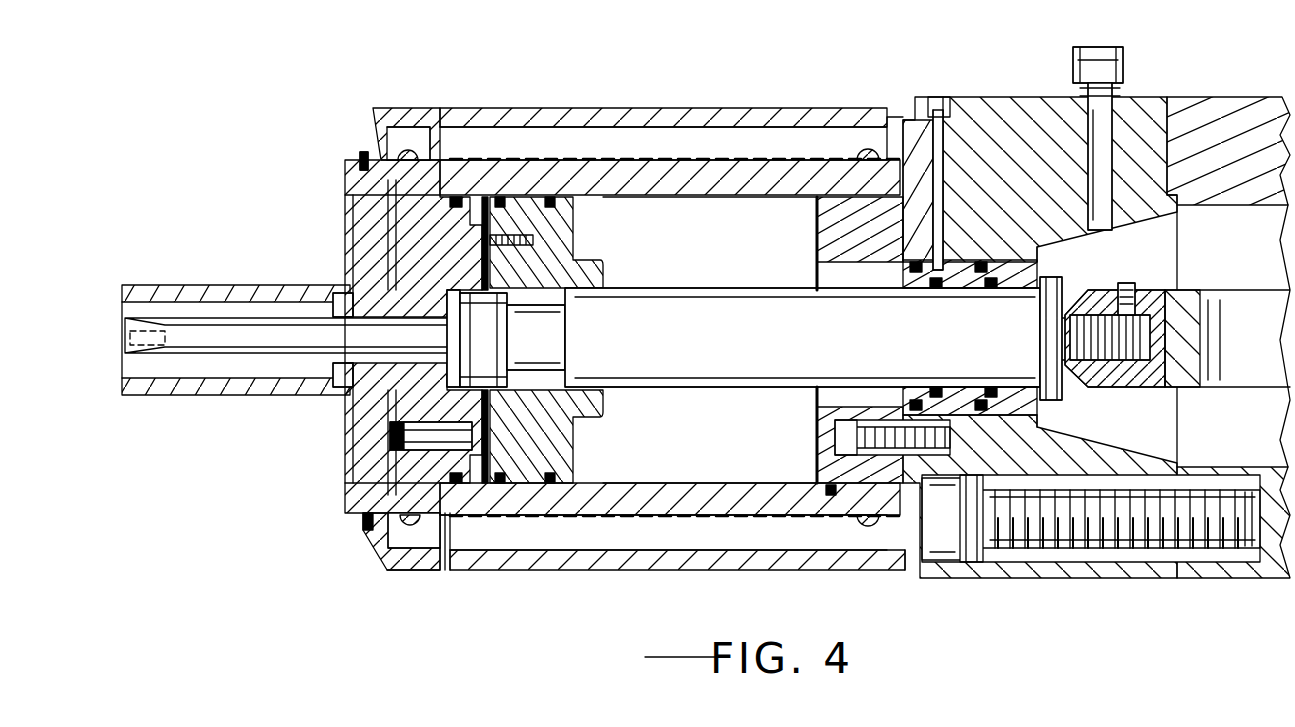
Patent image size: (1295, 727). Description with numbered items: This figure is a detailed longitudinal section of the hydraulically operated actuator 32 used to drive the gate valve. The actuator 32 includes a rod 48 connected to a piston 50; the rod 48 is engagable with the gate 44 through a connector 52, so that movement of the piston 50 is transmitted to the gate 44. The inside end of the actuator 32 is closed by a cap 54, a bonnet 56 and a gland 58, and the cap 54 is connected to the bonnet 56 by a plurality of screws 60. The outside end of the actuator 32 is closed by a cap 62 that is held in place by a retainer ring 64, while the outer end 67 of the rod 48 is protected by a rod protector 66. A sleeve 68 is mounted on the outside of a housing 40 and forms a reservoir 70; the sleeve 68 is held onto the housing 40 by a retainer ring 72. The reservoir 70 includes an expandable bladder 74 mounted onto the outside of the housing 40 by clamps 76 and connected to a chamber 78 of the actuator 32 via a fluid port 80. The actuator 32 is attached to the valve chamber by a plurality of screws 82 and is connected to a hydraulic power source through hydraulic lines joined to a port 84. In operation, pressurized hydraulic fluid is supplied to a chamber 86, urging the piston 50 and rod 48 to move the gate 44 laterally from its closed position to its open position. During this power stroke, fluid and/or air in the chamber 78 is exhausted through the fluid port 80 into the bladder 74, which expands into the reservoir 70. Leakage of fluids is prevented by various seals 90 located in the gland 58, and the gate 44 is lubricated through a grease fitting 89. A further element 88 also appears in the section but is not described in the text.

The actuator 32 is at (753, 82).
The housing 40 is at (345, 178).
The gate 44 is at (1238, 275).
The rod 48 is at (700, 288).
The piston 50 is at (565, 230).
The connector 52 is at (1143, 285).
The cap 54 is at (815, 238).
The bonnet 56 is at (1012, 110).
The gland 58 is at (960, 270).
The screws 60 is at (845, 440).
The cap 62 is at (410, 258).
The retainer ring 64 is at (395, 190).
The rod protector 66 is at (217, 396).
The outer end 67 is at (183, 350).
The sleeve 68 is at (573, 565).
The reservoir 70 is at (668, 535).
The retainer ring 72 is at (370, 150).
The expandable bladder 74 is at (727, 517).
The clamps 76 is at (405, 555).
The chamber 78 is at (770, 487).
The fluid port 80 is at (827, 492).
The screws 82 is at (1020, 555).
The port 84 is at (395, 447).
The chamber 86 is at (440, 222).
The pin 88 is at (937, 105).
The grease fitting 89 is at (1120, 47).
The seals 90 is at (470, 200).